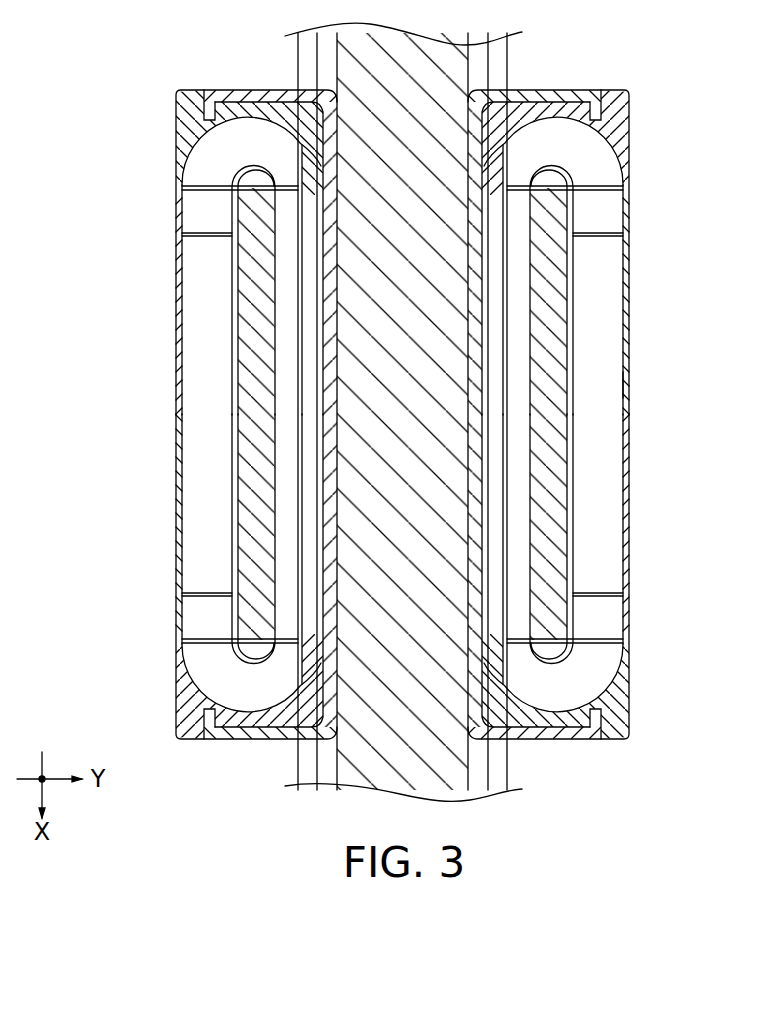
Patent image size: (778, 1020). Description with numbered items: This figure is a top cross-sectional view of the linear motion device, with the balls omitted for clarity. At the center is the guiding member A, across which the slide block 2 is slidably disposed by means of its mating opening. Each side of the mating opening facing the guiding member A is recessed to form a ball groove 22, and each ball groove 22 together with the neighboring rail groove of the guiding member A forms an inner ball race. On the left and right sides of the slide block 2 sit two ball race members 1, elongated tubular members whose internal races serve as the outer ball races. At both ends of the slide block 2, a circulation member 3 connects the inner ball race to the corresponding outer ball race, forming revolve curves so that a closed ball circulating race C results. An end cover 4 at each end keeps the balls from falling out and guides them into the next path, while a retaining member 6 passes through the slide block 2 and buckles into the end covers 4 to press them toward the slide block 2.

The ball race member 1 is at (175, 555).
The slide block 2 is at (253, 293).
The circulation member 3 is at (176, 616).
The end cover 4 is at (183, 692).
The retaining member 6 is at (224, 90).
The ball groove 22 is at (522, 467).
The guiding member A is at (445, 765).
The ball circulating race C is at (592, 385).